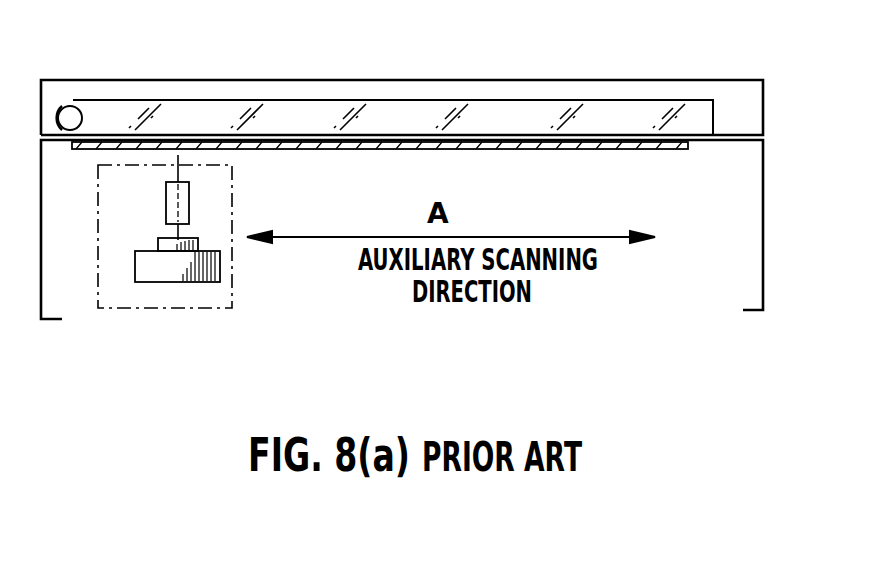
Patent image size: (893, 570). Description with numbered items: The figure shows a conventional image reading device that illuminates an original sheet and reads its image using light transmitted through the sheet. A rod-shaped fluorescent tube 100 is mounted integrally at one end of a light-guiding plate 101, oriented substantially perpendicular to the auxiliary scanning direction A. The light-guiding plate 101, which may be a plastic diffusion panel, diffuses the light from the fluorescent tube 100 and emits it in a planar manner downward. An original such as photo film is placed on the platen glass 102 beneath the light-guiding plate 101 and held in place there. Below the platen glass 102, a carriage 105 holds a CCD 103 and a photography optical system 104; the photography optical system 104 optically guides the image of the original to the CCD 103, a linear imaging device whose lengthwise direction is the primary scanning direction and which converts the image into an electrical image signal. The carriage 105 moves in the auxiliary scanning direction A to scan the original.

The roller 100 is at (86, 104).
The contact glass (original platen) 101 is at (327, 98).
The guide rail / slit plate 102 is at (570, 150).
The image sensor 103 is at (183, 238).
The lens 104 is at (189, 203).
The carriage (scanning unit) 105 is at (232, 180).